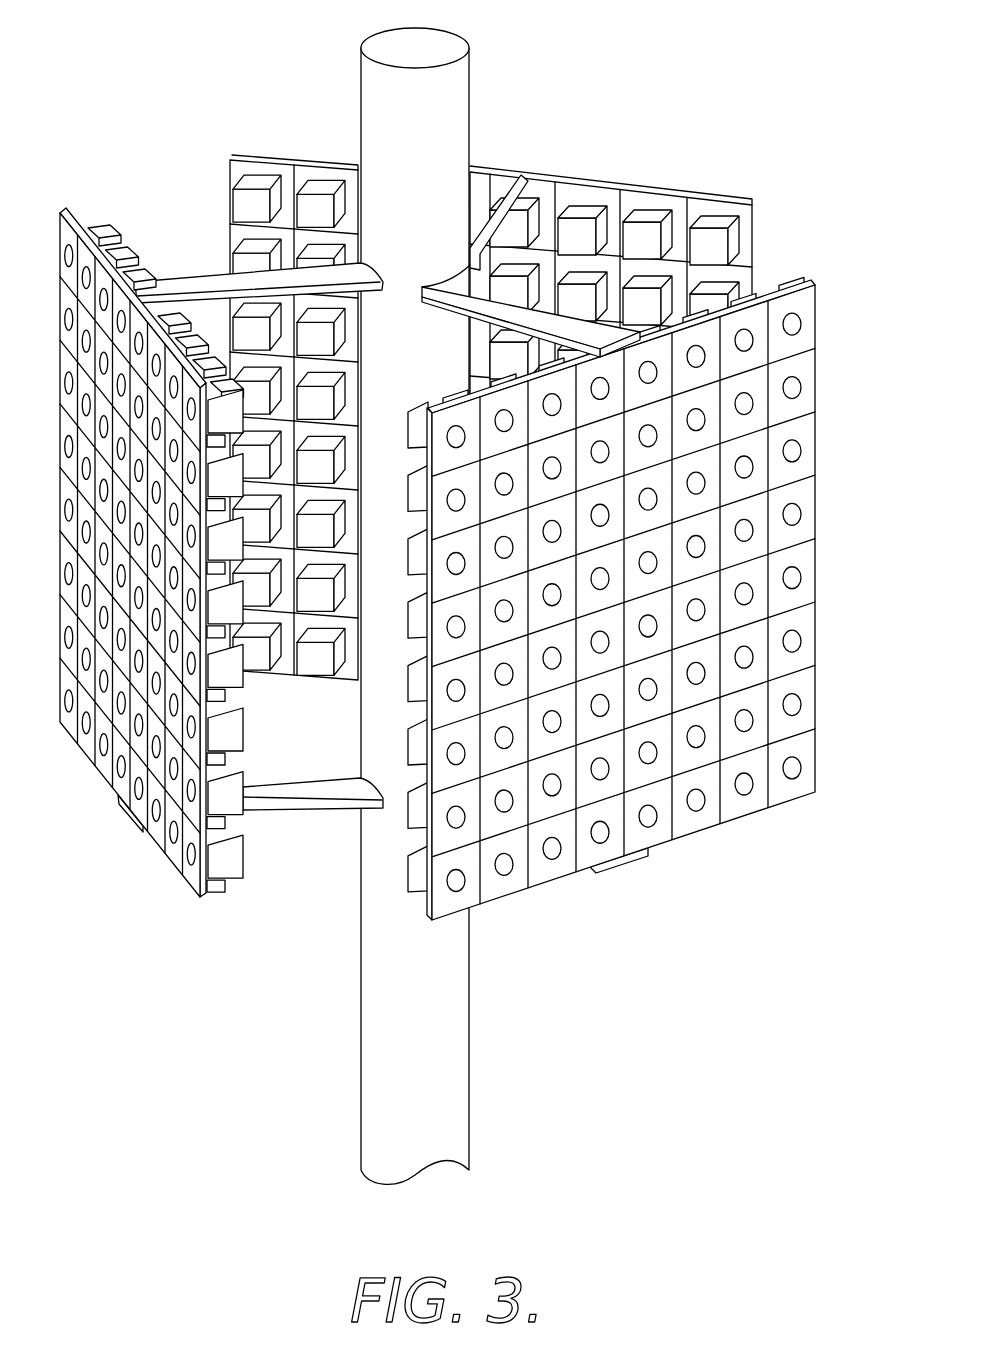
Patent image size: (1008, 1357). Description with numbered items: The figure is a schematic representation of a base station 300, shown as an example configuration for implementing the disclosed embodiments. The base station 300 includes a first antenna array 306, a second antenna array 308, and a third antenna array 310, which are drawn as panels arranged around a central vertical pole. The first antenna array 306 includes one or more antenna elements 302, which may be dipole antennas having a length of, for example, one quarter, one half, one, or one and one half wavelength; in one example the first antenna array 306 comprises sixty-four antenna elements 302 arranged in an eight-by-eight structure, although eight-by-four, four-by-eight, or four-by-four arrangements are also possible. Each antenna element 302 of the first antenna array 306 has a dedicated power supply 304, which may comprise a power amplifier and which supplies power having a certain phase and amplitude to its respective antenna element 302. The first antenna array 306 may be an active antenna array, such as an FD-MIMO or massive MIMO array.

The base station 300 is at (771, 66).
The antenna element 302 is at (430, 458).
The power supply 304 is at (417, 432).
The first antenna array 306 is at (590, 621).
The second antenna array 308 is at (152, 838).
The third antenna array 310 is at (655, 171).